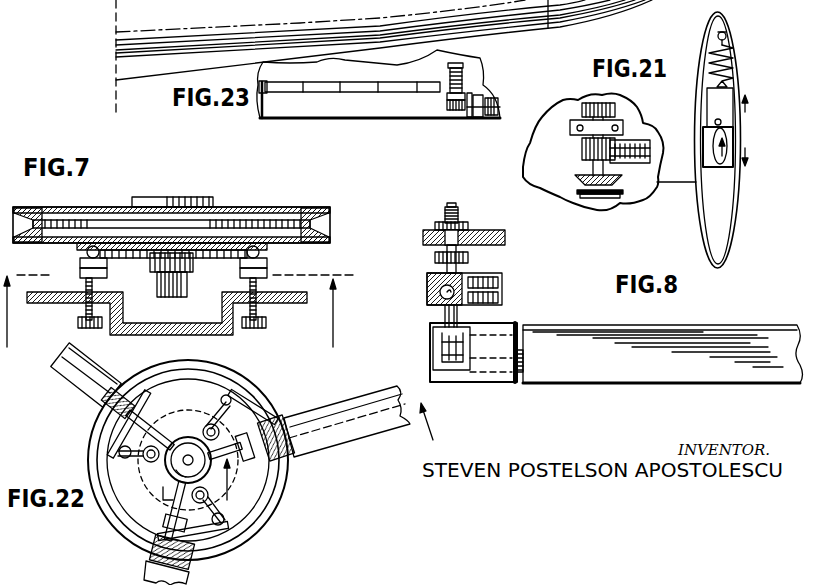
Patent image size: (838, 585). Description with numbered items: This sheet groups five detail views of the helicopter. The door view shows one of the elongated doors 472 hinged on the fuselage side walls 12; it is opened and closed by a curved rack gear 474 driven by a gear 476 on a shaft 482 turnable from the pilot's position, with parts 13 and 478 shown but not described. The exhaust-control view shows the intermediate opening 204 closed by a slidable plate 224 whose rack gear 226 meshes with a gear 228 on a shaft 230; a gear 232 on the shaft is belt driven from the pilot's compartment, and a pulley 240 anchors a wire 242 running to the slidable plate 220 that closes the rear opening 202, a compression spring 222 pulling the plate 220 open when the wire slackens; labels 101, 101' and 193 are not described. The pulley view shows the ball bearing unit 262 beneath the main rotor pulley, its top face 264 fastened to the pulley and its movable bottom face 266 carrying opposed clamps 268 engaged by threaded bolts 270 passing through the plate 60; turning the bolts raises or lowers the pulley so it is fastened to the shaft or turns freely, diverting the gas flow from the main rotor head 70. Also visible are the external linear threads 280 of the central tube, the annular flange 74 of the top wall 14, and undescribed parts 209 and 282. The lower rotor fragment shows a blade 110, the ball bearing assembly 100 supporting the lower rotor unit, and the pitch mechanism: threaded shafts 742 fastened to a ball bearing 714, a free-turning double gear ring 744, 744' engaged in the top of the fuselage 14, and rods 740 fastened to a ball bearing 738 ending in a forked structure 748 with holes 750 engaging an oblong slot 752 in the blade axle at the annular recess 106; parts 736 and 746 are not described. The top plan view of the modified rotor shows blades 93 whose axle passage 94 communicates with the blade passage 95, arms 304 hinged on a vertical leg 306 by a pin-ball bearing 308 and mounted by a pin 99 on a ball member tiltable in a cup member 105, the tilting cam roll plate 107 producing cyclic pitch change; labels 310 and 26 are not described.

In FIG. 23, the side walls 12 is at (412, 52).
In FIG. 23, the rail 13 is at (350, 88).
In FIG. 23, the elongated door 472 is at (308, 115).
In FIG. 23, the curved rack gear 474 is at (470, 66).
In FIG. 23, the gear 476 is at (482, 84).
In FIG. 23, the shaft 478 is at (497, 105).
In FIG. 23, the shaft 482 is at (490, 117).
In FIG. 21, the gear 232 is at (590, 103).
In FIG. 21, the intermediate opening 204 is at (625, 128).
In FIG. 21, the gear 228 is at (582, 150).
In FIG. 21, the rack gear 226 is at (650, 152).
In FIG. 21, the shaft 230 is at (585, 172).
In FIG. 21, the slidable plate 224 is at (643, 174).
In FIG. 21, the pulley 240 is at (575, 200).
In FIG. 21, the wire 242 is at (677, 182).
In FIG. 8, the hook 101 is at (757, 33).
In FIG. 8, the hook 101' is at (674, 94).
In FIG. 8, the compression spring 222 is at (735, 62).
In FIG. 8, the slidable plate 220 is at (720, 100).
In FIG. 8, the ball bearing assembly 100 is at (722, 122).
In FIG. 8, the opening 202 is at (735, 129).
In FIG. 8, the indicator 193 is at (735, 133).
In FIG. 8, the cup member 105 is at (741, 190).
In FIG. 8, the blades 110 is at (700, 333).
In FIG. 8, the threaded shafts 742 is at (470, 200).
In FIG. 8, the double gear ring 744 is at (474, 217).
In FIG. 8, the top wall 14 is at (500, 240).
In FIG. 8, the gear ring 744' is at (480, 259).
In FIG. 8, the block 736 is at (502, 280).
In FIG. 8, the ball bearing 714 is at (440, 292).
In FIG. 8, the ball bearing 738 is at (500, 303).
In FIG. 8, the rods 740 is at (445, 320).
In FIG. 8, the housing 746 is at (474, 352).
In FIG. 8, the forked structure 748 is at (433, 333).
In FIG. 8, the annular recess 106 is at (433, 355).
In FIG. 8, the holes 750 is at (433, 375).
In FIG. 8, the oblong slot 752 is at (455, 383).
In FIG. 7, the hub 209 is at (214, 199).
In FIG. 7, the ball bearing unit 262 is at (86, 255).
In FIG. 7, the top face 264 is at (268, 250).
In FIG. 7, the bottom face 266 is at (315, 258).
In FIG. 7, the opposed clamps 268 is at (270, 271).
In FIG. 7, the threaded bolts 270 is at (85, 287).
In FIG. 7, the external linear threads 280 is at (194, 270).
In FIG. 7, the shaft 282 is at (158, 294).
In FIG. 7, the plate 60 is at (73, 303).
In FIG. 7, the annular flange 74 is at (367, 336).
In FIG. 22, the main rotor head 70 is at (277, 512).
In FIG. 22, the arms 304 is at (204, 400).
In FIG. 22, the hub 310 is at (204, 430).
In FIG. 22, the pin-ball bearing 308 is at (226, 398).
In FIG. 22, the vertical leg 306 is at (220, 430).
In FIG. 22, the cam roll plate 107 is at (137, 470).
In FIG. 22, the central passage 95 is at (250, 456).
In FIG. 22, the blade 93 is at (333, 414).
In FIG. 22, the central passage 94 is at (373, 422).
In FIG. 22, the headed bolt 99 is at (165, 498).
In FIG. 22, the direction arrow 26 is at (341, 463).